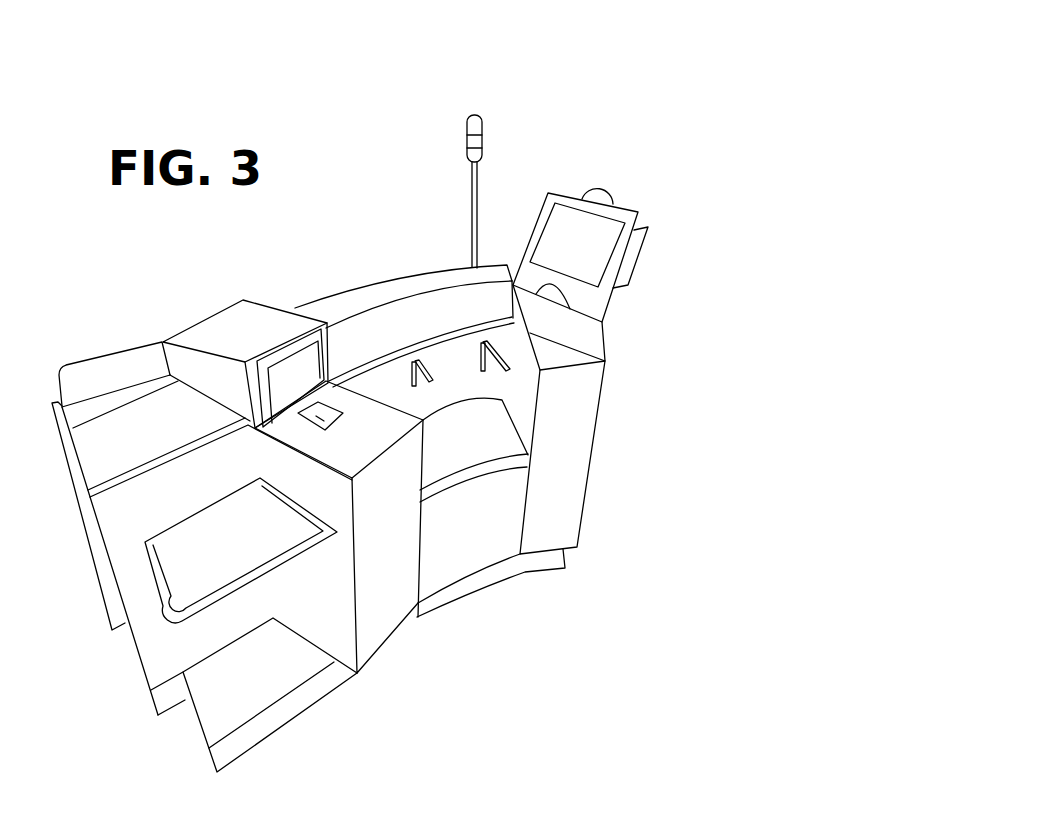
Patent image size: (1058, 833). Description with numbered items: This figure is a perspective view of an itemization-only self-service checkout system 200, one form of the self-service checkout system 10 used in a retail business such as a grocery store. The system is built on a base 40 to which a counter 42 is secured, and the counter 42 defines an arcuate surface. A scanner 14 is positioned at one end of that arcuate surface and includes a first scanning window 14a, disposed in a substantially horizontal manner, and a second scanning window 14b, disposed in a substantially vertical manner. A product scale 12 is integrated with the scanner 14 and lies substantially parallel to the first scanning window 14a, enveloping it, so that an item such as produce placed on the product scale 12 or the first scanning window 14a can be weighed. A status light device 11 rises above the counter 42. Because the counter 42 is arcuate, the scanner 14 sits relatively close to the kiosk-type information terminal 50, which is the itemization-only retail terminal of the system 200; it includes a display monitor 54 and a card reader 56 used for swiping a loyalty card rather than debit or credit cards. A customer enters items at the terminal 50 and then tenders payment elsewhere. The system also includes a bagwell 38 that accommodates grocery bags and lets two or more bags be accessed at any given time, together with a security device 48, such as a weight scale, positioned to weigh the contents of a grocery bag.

The self-service checkout system 10 is at (690, 67).
The itemization-only self-service checkout system 200 is at (646, 140).
The status light device 11 is at (467, 118).
The product scale 12 is at (370, 447).
The scanner 14 is at (255, 449).
The first scanning window 14a is at (314, 421).
The second scanning window 14b is at (290, 367).
The bagwell 38 is at (472, 447).
The base 40 is at (382, 623).
The counter 42 is at (370, 318).
The security device 48 is at (435, 490).
The kiosk-type information terminal 50 is at (634, 199).
The display monitor 54 is at (592, 267).
The card reader 56 is at (638, 256).